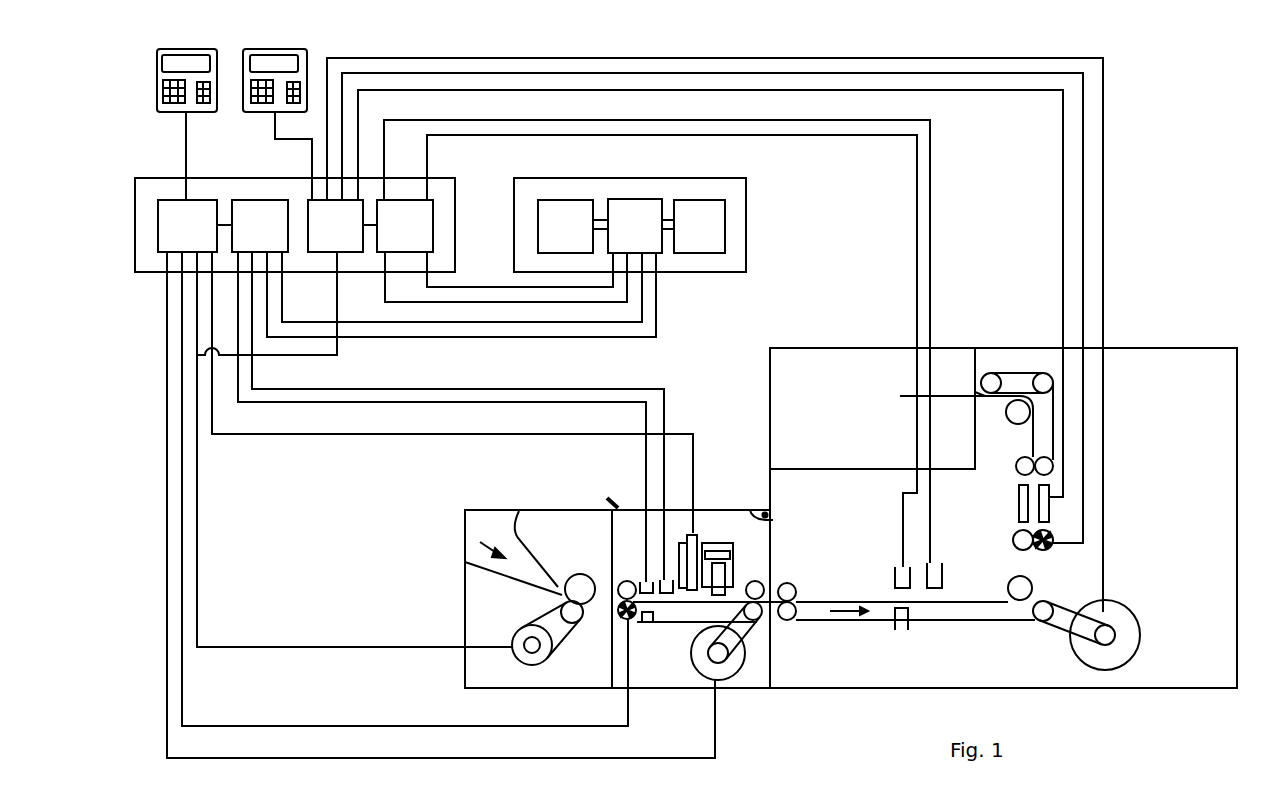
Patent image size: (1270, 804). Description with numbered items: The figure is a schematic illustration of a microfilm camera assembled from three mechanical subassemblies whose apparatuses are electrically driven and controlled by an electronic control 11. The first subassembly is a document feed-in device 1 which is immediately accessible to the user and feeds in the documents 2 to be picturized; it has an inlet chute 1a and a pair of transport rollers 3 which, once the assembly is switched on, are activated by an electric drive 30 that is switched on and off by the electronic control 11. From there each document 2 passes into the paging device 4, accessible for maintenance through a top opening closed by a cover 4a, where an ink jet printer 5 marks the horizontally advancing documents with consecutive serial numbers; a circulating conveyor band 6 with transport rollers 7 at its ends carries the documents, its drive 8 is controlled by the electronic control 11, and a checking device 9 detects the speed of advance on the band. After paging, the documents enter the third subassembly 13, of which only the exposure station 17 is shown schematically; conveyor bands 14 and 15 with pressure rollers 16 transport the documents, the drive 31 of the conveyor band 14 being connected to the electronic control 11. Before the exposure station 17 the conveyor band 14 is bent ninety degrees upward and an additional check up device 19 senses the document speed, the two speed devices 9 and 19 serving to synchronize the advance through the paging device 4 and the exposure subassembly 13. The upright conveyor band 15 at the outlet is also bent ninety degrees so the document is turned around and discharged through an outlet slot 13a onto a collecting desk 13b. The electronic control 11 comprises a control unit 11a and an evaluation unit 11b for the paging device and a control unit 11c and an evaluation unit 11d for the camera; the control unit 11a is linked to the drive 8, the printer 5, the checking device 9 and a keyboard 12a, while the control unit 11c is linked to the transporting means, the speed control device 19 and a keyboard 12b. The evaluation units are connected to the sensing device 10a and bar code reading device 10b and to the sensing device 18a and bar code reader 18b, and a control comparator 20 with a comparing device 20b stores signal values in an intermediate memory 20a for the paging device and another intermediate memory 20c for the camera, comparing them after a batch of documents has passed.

The document feed-in device 1 is at (510, 678).
The inlet chute 1a is at (504, 528).
The documents 2 is at (598, 597).
The pair of transport rollers 3 is at (584, 605).
The paging device 4 is at (665, 692).
The cover 4a is at (615, 501).
The ink jet printer 5 is at (720, 553).
The circulating conveyor band 6 is at (656, 616).
The transport rollers 7 is at (628, 583).
The drive 8 is at (733, 670).
The checking device 9 is at (624, 618).
The sensing device 10a is at (646, 623).
The bar code reading device 10b is at (668, 573).
The electronic control 11 is at (148, 218).
The control unit for the paging device 11a is at (187, 226).
The evaluation unit for the paging device 11b is at (260, 226).
The control unit for the camera 11c is at (335, 226).
The evaluation unit for the camera 11d is at (405, 226).
The keyboard 12a is at (170, 111).
The keyboard 12b is at (265, 111).
The exposure subassembly 13 is at (1238, 618).
The outlet slot 13a is at (975, 392).
The collecting desk 13b is at (818, 468).
The conveyor band 14 is at (987, 623).
The conveyor band 15 is at (1057, 415).
The pressure rollers 16 is at (1015, 414).
The exposure station 17 is at (1024, 497).
The sensing device 18a is at (896, 584).
The bar code reader 18b is at (943, 570).
The check up device 19 is at (1053, 533).
The control comparator 20 is at (745, 228).
The intermediate memory for the paging device 20a is at (565, 226).
The comparing device 20b is at (635, 226).
The intermediate memory for the camera 20c is at (699, 226).
The electric drive 30 is at (523, 633).
The drive 31 is at (1130, 642).